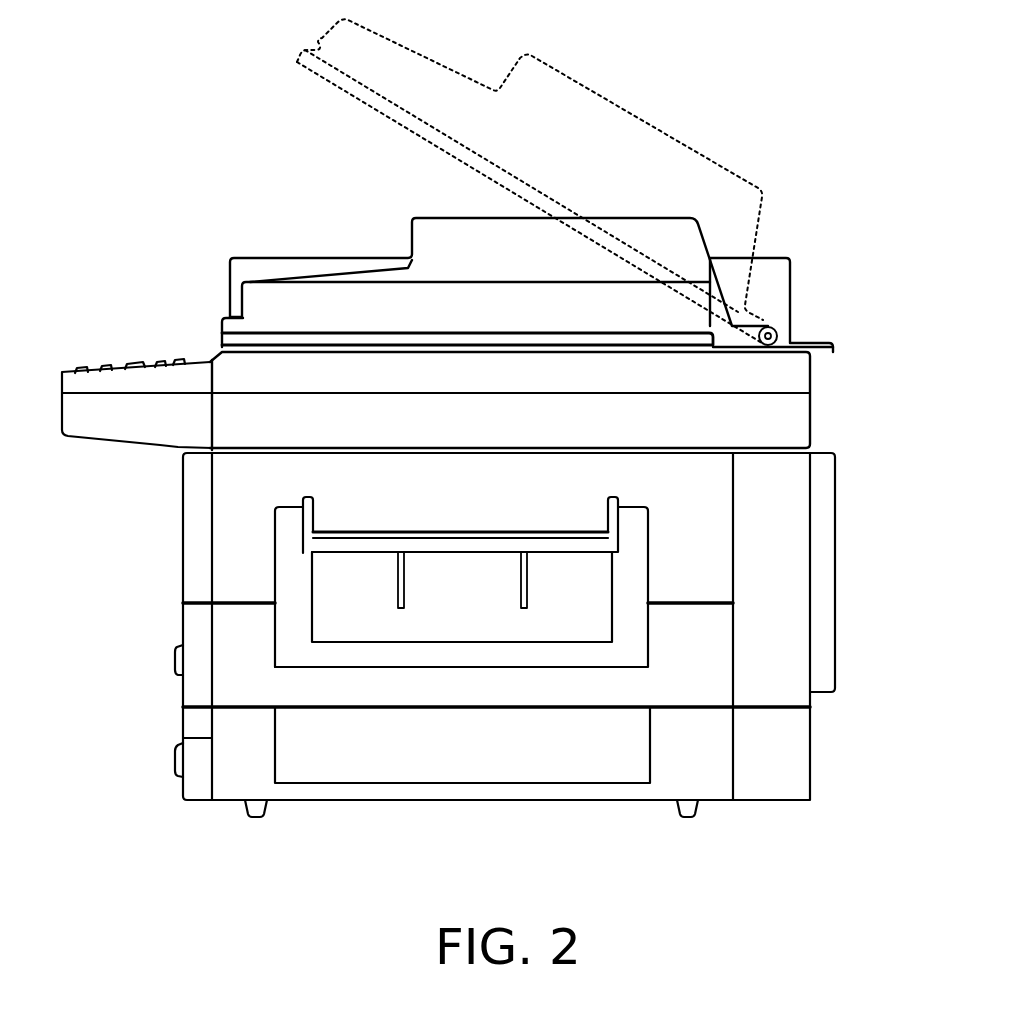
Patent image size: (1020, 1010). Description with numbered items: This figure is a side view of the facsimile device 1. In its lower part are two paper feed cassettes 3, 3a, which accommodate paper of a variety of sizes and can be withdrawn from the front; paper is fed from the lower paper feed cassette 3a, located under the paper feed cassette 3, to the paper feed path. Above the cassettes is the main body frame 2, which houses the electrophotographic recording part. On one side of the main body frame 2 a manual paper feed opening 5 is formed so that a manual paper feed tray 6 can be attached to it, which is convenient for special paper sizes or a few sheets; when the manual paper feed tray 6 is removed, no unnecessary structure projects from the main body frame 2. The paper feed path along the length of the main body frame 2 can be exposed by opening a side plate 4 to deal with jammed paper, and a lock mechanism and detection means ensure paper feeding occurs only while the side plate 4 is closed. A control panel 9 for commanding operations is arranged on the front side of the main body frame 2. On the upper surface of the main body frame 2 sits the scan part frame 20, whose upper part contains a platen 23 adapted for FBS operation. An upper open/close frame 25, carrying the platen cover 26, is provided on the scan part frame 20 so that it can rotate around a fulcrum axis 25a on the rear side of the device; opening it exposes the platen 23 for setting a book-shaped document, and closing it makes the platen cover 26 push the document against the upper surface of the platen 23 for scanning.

The facsimile device 1 is at (706, 134).
The main body frame 2 is at (838, 596).
The paper feed cassette 3 is at (222, 628).
The paper feed cassette 3a is at (226, 778).
The side plate 4 is at (280, 552).
The manual paper feed opening 5 is at (478, 530).
The manual paper feed tray 6 is at (448, 548).
The control panel 9 is at (118, 356).
The scan part frame 20 is at (814, 331).
The platen 23 is at (390, 352).
The upper open/close frame 25 is at (434, 218).
The fulcrum axis 25a is at (777, 328).
The platen cover 26 is at (360, 340).